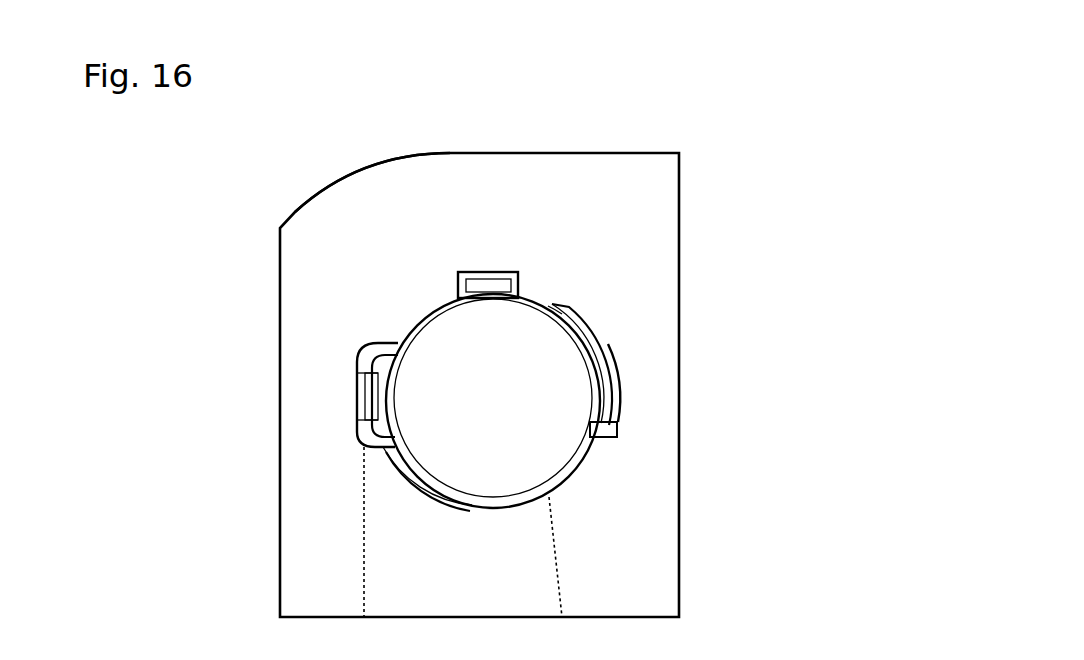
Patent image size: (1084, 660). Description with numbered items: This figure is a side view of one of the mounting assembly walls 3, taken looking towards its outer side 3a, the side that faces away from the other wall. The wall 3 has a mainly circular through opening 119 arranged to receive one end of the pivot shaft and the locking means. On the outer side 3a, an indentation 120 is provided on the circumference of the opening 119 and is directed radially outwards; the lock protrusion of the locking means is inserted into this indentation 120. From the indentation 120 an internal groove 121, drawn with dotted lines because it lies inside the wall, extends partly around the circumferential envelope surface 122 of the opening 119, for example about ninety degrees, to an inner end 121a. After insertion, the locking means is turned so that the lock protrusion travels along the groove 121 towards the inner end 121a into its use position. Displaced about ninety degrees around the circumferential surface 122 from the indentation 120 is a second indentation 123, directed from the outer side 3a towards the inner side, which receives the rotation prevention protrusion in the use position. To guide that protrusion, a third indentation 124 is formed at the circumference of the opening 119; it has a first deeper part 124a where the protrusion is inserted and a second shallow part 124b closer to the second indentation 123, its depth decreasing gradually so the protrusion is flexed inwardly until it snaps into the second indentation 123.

The wall 3 is at (631, 130).
The outer side of the wall 3a is at (405, 192).
The through opening 119 is at (503, 405).
The indentation 120 is at (355, 398).
The internal groove 121 is at (370, 549).
The inner end of the groove 121a is at (551, 542).
The circumferential envelope surface 122 is at (533, 483).
The second indentation 123 is at (490, 268).
The third indentation 124 is at (613, 375).
The first deeper part of the third indentation 124a is at (620, 413).
The second shallow part of the third indentation 124b is at (562, 307).